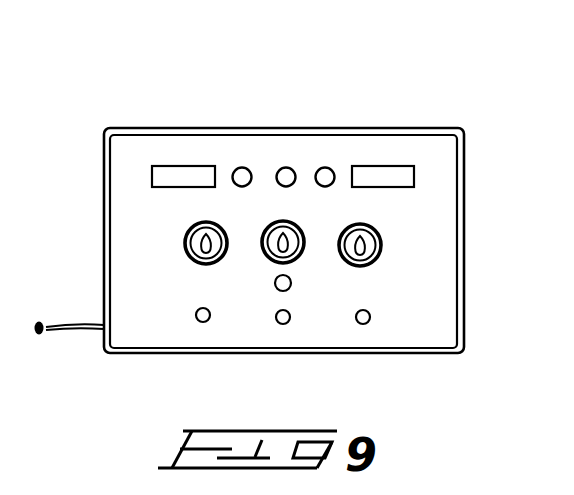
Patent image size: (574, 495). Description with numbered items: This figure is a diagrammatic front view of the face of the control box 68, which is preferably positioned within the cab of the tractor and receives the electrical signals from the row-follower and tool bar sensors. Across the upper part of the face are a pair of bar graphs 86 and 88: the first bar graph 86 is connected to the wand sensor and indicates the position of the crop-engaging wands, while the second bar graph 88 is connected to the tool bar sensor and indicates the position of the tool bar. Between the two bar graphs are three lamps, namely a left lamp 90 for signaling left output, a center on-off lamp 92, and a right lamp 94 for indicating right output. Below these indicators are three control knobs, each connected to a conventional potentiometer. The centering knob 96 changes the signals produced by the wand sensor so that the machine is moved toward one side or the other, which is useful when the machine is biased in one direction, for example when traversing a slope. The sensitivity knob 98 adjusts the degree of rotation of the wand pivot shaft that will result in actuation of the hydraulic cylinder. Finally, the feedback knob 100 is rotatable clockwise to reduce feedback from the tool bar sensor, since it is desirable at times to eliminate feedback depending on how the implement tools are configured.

The control box 68 is at (104, 206).
The bar graph 86 is at (177, 170).
The bar graph 88 is at (405, 170).
The left lamp 90 is at (248, 169).
The center on-off lamp 92 is at (291, 169).
The right lamp 94 is at (330, 169).
The centering knob 96 is at (184, 247).
The sensitivity knob 98 is at (280, 253).
The feedback knob 100 is at (367, 242).